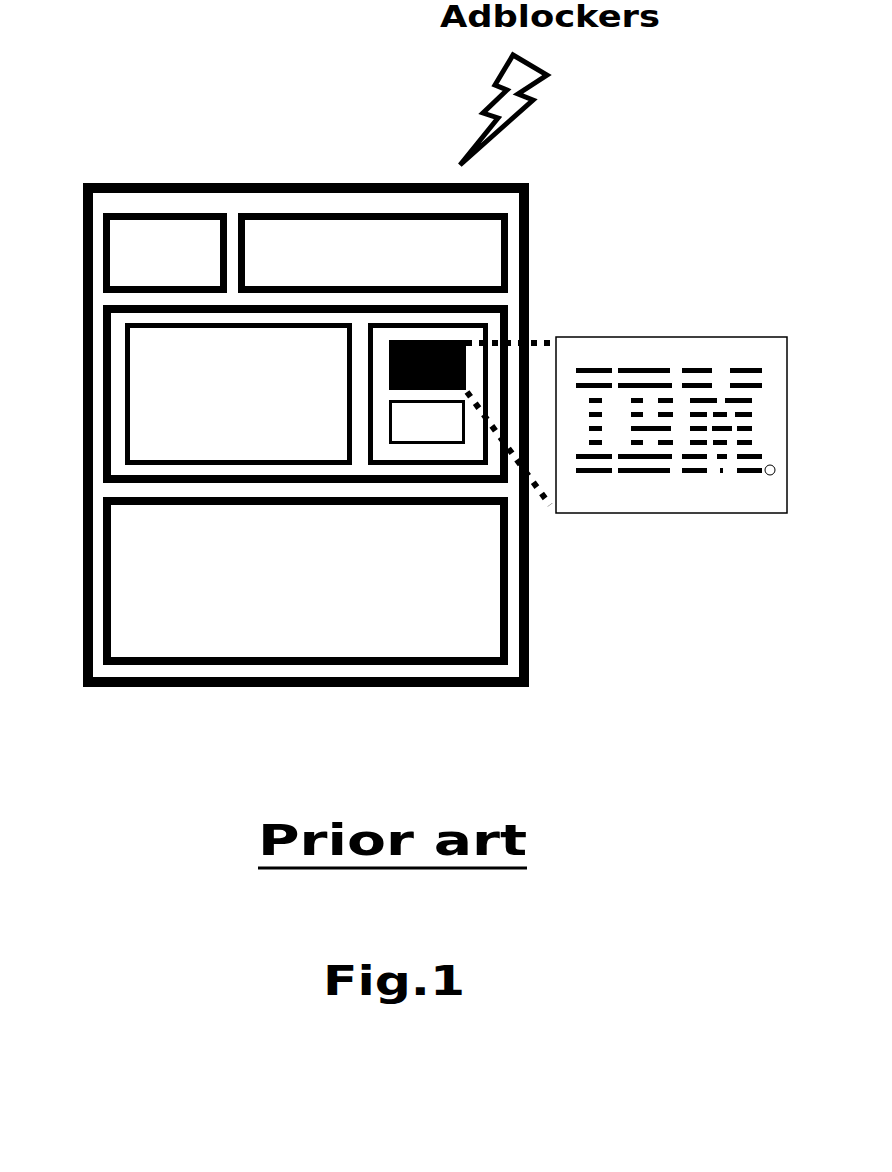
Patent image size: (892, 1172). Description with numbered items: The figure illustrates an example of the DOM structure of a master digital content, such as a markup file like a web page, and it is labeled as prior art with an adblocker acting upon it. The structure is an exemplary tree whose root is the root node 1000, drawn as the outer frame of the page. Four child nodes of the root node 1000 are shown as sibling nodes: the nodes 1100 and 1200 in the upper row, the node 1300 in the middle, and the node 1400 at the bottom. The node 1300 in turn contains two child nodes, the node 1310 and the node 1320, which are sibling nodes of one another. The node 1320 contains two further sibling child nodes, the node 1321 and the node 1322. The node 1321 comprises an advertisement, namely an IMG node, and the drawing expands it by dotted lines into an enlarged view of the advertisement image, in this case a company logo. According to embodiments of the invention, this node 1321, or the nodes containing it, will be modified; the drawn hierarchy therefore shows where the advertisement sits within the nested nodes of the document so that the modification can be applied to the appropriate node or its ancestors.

The root node 1000 is at (529, 188).
The child node 1100 is at (105, 216).
The child node 1200 is at (242, 216).
The child node 1300 is at (508, 307).
The child node 1310 is at (351, 325).
The child node 1320 is at (483, 465).
The advertisement node 1321 is at (672, 513).
The child node 1322 is at (391, 444).
The child node 1400 is at (105, 657).